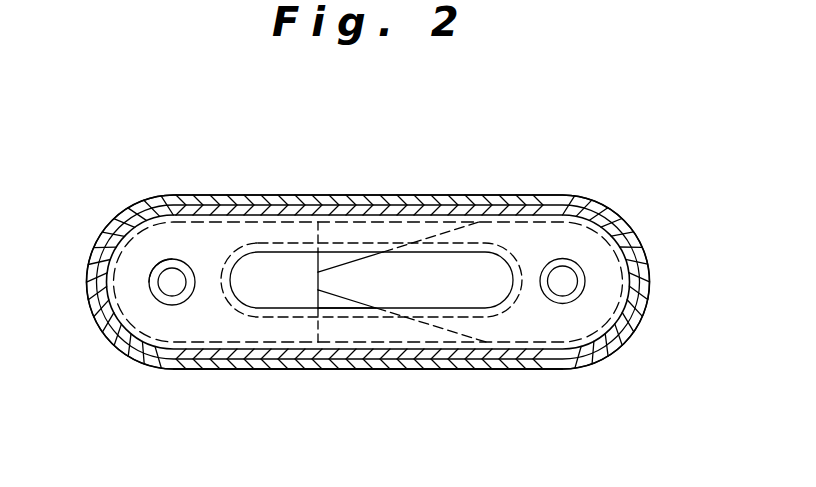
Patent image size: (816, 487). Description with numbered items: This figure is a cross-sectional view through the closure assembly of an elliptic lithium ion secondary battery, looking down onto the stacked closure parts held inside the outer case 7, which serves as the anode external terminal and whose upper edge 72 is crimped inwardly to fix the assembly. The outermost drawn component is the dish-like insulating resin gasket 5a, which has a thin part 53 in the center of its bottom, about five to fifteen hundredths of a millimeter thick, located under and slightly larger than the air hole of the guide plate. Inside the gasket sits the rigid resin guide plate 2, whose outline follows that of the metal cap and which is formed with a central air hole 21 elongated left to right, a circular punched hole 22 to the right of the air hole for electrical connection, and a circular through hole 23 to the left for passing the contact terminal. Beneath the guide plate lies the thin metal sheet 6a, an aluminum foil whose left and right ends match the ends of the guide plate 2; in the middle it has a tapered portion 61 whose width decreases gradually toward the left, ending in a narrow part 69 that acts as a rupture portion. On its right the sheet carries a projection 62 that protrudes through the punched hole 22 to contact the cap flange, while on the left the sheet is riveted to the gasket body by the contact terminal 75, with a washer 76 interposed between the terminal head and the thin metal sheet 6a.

The resin guide plate 2 is at (598, 250).
The insulating resin gasket 5a is at (198, 370).
The thin metal sheet 6a is at (343, 300).
The outer case 7 is at (440, 196).
The air hole 21 is at (442, 298).
The punched hole 22 is at (558, 275).
The through hole 23 is at (158, 298).
The thin part 53 is at (336, 243).
The tapered portion 61 is at (390, 278).
The projection 62 is at (570, 287).
The narrow part 69 is at (316, 281).
The upper edge 72 is at (525, 368).
The contact terminal 75 is at (172, 284).
The washer 76 is at (150, 282).